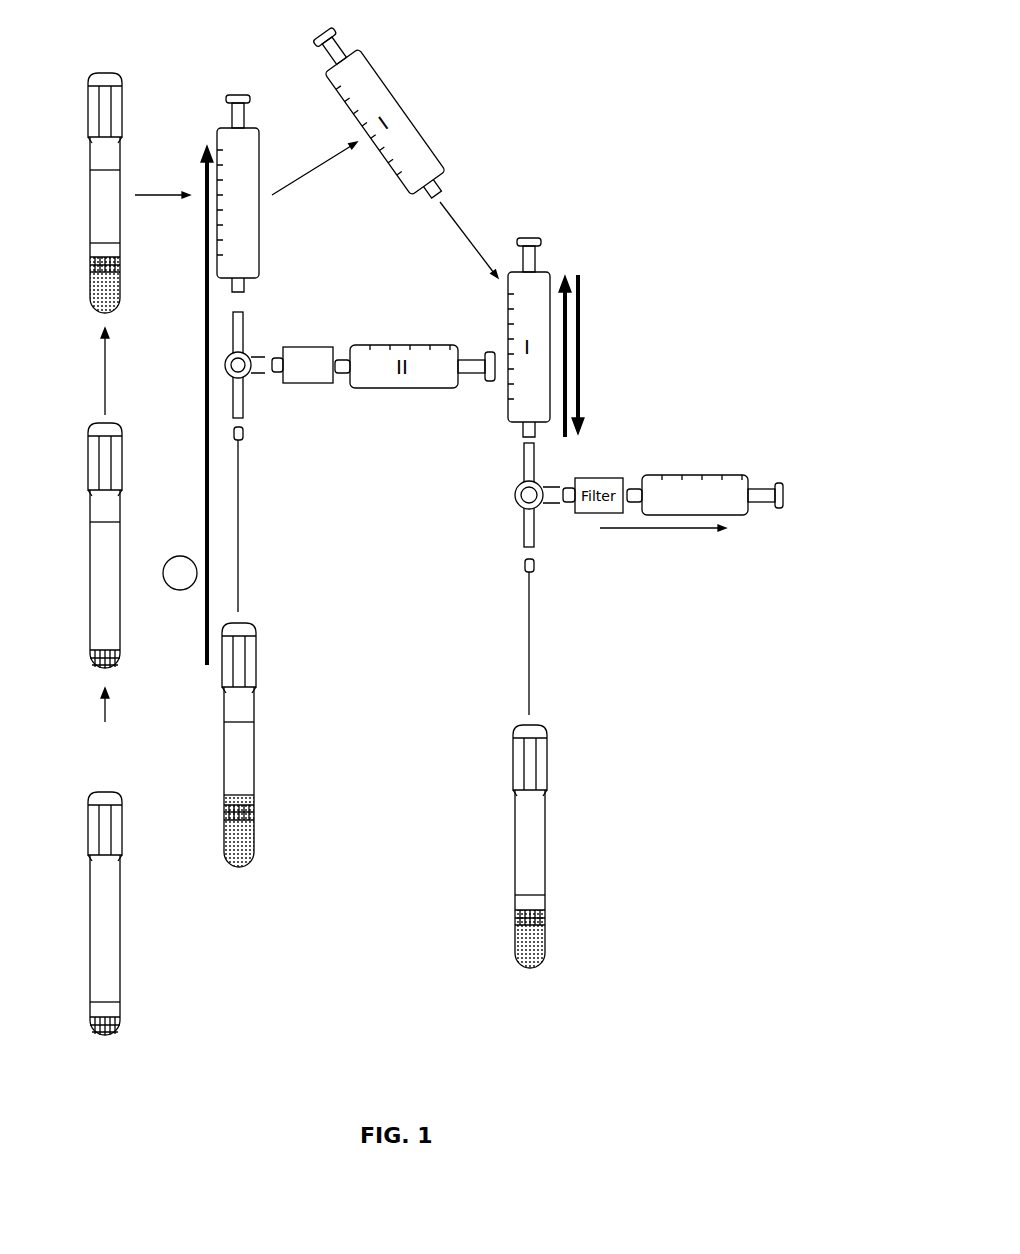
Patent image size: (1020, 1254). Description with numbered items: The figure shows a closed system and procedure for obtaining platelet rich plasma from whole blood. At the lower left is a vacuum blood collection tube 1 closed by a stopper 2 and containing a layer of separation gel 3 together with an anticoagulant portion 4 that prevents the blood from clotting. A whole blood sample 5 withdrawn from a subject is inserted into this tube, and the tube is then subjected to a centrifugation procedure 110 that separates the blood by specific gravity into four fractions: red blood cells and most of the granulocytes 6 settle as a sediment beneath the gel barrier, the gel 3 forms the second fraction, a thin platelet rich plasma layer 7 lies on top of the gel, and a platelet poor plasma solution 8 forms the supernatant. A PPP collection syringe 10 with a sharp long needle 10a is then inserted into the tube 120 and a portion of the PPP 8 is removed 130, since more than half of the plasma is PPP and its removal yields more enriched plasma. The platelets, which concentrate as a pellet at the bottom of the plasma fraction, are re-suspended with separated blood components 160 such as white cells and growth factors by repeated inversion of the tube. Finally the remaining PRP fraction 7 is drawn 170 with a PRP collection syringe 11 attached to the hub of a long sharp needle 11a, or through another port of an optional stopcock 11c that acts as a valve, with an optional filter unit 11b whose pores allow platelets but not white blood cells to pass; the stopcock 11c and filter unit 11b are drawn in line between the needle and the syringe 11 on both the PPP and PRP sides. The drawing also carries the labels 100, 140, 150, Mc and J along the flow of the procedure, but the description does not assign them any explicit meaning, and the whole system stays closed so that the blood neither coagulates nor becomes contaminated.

The blood collection tube 1 is at (121, 932).
The stopper 2 is at (122, 830).
The separation gel 3 is at (121, 264).
The anticoagulant portion 4 is at (121, 1000).
The whole blood sample 5 is at (121, 535).
The red blood cells and granulocytes layer 6 is at (121, 295).
The platelet rich plasma layer 7 is at (121, 243).
The platelet poor plasma solution 8 is at (121, 176).
The PPP collection syringe 10 is at (237, 90).
The sharp long needle 10a is at (246, 435).
The PRP collection syringe 11 is at (712, 475).
The sharp long needle 11a is at (522, 592).
The filter unit 11b is at (318, 346).
The stopcock 11c is at (514, 497).
The stopcock valve Mc is at (248, 356).
The step of adding sample 100 is at (114, 712).
The centrifugation procedure 110 is at (116, 399).
The insertion of syringe into blood collection tube 120 is at (173, 170).
The removal of PPP portion 130 is at (249, 515).
The step of inverting syringe 140 is at (287, 144).
The step of settling 150 is at (500, 219).
The re-suspending of platelets with separated blood components 160 is at (594, 337).
The drawing of PRP fraction 170 is at (639, 551).
The junction J is at (180, 573).